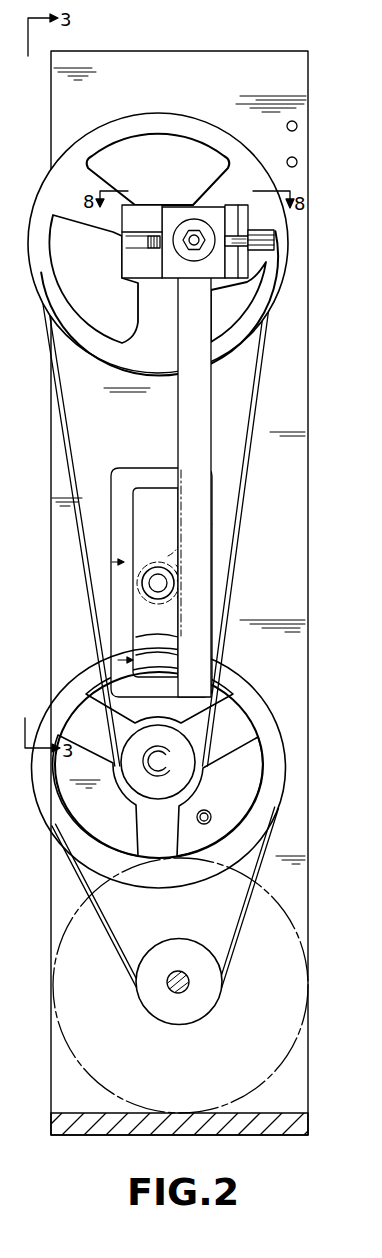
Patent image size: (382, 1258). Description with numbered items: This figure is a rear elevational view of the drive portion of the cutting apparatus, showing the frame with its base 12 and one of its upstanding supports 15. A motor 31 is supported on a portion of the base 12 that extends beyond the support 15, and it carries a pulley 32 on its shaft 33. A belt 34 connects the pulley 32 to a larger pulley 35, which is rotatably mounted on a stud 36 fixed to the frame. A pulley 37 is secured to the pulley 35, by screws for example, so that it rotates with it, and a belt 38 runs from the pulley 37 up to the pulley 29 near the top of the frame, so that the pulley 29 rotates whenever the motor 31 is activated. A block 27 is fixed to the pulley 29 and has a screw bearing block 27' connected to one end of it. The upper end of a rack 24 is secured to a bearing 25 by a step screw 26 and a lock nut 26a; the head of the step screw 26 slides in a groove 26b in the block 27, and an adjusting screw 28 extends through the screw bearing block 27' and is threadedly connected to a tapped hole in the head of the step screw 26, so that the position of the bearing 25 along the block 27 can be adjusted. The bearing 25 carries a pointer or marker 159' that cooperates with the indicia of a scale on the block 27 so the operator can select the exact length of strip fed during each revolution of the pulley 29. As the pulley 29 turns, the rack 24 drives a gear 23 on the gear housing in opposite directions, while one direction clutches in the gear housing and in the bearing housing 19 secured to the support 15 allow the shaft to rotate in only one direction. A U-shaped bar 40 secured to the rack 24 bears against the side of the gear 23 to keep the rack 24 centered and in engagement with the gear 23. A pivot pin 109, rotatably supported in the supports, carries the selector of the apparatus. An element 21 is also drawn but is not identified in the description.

The base 12 is at (309, 1126).
The upstanding support 15 is at (308, 352).
The bearing housing 19 is at (140, 565).
The cam member 21 is at (140, 603).
The gear 23 is at (177, 545).
The rack 24 is at (198, 590).
The bearing 25 is at (212, 250).
The step screw 26 is at (190, 250).
The lock nut 26a is at (180, 250).
The groove 26b is at (124, 242).
The block 27 is at (142, 221).
The screw bearing block 27' is at (247, 222).
The adjusting screw 28 is at (276, 241).
The pulley 29 is at (162, 99).
The motor 31 is at (290, 1048).
The pulley 32 is at (211, 1013).
The shaft 33 is at (176, 988).
The belt 34 is at (234, 938).
The pulley 35 is at (278, 708).
The stud 36 is at (166, 761).
The pulley 37 is at (131, 799).
The belt 38 is at (252, 484).
The U-shaped bar 40 is at (116, 468).
The pivot pin 109 is at (208, 811).
The pointer or marker 159' is at (199, 185).